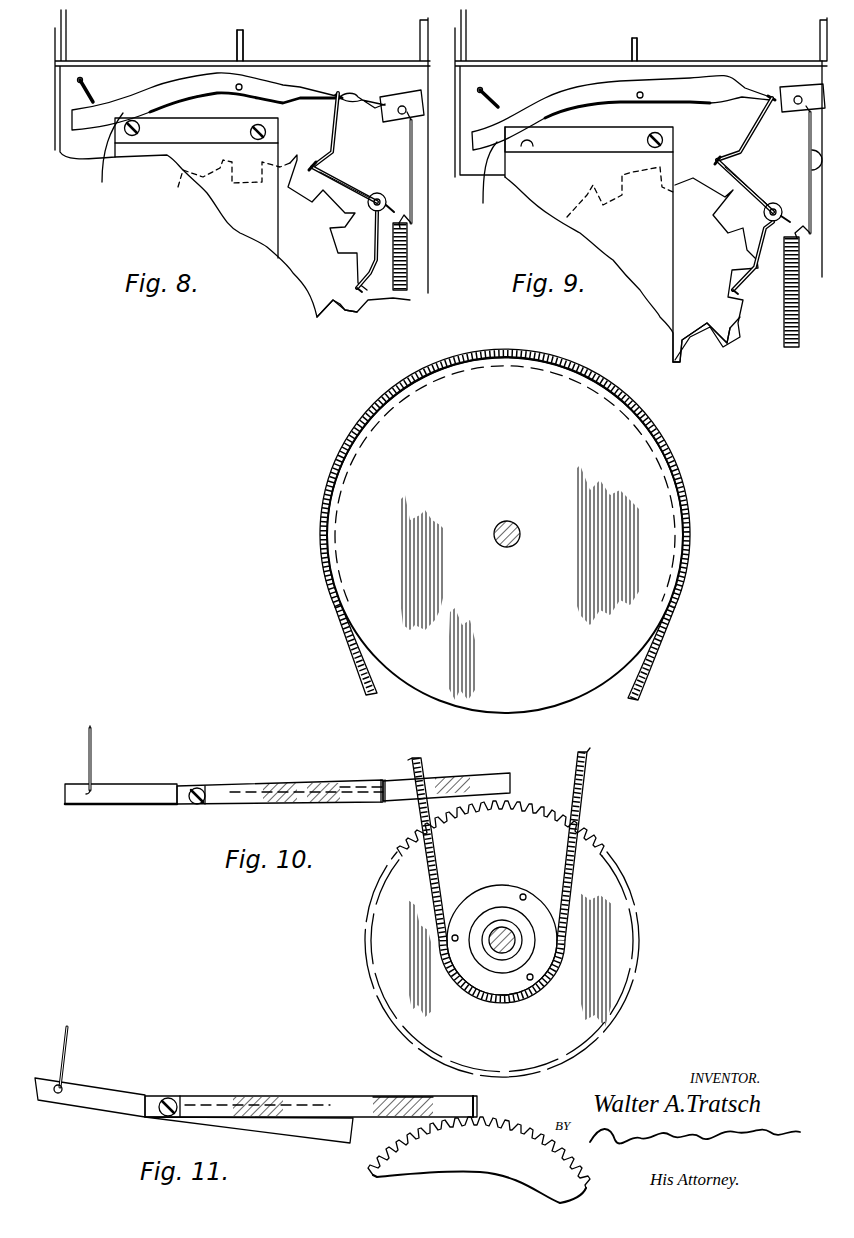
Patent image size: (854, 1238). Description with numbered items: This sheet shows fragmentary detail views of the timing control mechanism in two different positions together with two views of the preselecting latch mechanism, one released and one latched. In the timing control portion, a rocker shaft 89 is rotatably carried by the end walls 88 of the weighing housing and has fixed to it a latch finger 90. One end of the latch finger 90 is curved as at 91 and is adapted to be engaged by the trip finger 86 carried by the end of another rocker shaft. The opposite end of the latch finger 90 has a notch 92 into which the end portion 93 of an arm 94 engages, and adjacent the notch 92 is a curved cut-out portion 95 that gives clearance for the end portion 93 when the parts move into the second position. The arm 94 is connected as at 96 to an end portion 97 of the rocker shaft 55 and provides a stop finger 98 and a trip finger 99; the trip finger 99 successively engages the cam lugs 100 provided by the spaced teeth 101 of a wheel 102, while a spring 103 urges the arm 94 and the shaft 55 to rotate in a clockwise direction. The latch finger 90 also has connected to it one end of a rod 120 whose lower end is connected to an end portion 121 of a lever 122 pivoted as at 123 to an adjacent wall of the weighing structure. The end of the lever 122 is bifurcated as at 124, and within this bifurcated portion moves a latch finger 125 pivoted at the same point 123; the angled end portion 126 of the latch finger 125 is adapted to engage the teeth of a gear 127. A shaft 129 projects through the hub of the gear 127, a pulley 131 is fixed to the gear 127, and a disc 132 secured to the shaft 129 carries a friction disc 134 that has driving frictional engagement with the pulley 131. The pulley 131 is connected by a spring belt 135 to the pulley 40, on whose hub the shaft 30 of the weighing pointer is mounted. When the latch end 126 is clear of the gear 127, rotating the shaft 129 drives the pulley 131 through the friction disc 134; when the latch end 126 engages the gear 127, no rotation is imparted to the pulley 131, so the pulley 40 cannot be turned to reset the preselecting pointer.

In FIG. 10, the shaft 30 is at (512, 547).
In FIG. 10, the pulley 40 is at (660, 548).
In FIG. 8, the rocker shaft 55 is at (384, 201).
In FIG. 9, the rocker shaft 55 is at (776, 226).
In FIG. 8, the trip finger 86 is at (96, 90).
In FIG. 9, the trip finger 86 is at (500, 98).
In FIG. 8, the end walls 88 is at (337, 80).
In FIG. 9, the end walls 88 is at (628, 80).
In FIG. 8, the rocker shaft 89 is at (242, 84).
In FIG. 9, the rocker shaft 89 is at (645, 90).
In FIG. 8, the latch finger 90 is at (280, 92).
In FIG. 9, the latch finger 90 is at (708, 82).
In FIG. 8, the curved end portion 91 is at (106, 159).
In FIG. 9, the curved end portion 91 is at (483, 182).
In FIG. 8, the notch 92 is at (340, 96).
In FIG. 9, the notch 92 is at (772, 96).
In FIG. 8, the end portion 93 is at (345, 133).
In FIG. 9, the end portion 93 is at (752, 128).
In FIG. 8, the arm 94 is at (355, 178).
In FIG. 9, the arm 94 is at (755, 182).
In FIG. 8, the curved cut-out portion 95 is at (377, 103).
In FIG. 9, the curved cut-out portion 95 is at (790, 90).
In FIG. 8, the connection 96 is at (367, 200).
In FIG. 9, the connection 96 is at (766, 206).
In FIG. 8, the end portion 97 is at (370, 212).
In FIG. 9, the end portion 97 is at (764, 215).
In FIG. 8, the stop finger 98 is at (307, 164).
In FIG. 9, the stop finger 98 is at (712, 162).
In FIG. 8, the trip finger 99 is at (363, 286).
In FIG. 9, the trip finger 99 is at (742, 286).
In FIG. 8, the cam lugs 100 is at (348, 300).
In FIG. 9, the cam lugs 100 is at (730, 330).
In FIG. 8, the spaced teeth 101 is at (190, 177).
In FIG. 9, the spaced teeth 101 is at (733, 325).
In FIG. 8, the wheel 102 is at (327, 222).
In FIG. 9, the wheel 102 is at (716, 269).
In FIG. 8, the spring 103 is at (408, 262).
In FIG. 9, the spring 103 is at (778, 318).
In FIG. 9, the rod 120 is at (808, 158).
In FIG. 10, the rod 120 is at (95, 752).
In FIG. 11, the rod 120 is at (70, 1040).
In FIG. 10, the end portion 121 is at (75, 798).
In FIG. 11, the end portion 121 is at (68, 1105).
In FIG. 10, the lever 122 is at (172, 806).
In FIG. 11, the lever 122 is at (128, 1115).
In FIG. 10, the pivot 123 is at (205, 788).
In FIG. 11, the pivot 123 is at (165, 1097).
In FIG. 10, the bifurcated portion 124 is at (370, 780).
In FIG. 10, the latch finger 125 is at (448, 773).
In FIG. 11, the latch finger 125 is at (372, 1100).
In FIG. 10, the angled end portion 126 is at (510, 773).
In FIG. 11, the angled end portion 126 is at (475, 1095).
In FIG. 10, the gear 127 is at (608, 863).
In FIG. 11, the gear 127 is at (510, 1130).
In FIG. 10, the shaft 129 is at (520, 935).
In FIG. 10, the pulley 131 is at (535, 912).
In FIG. 10, the disc 132 is at (512, 950).
In FIG. 10, the friction disc 134 is at (525, 945).
In FIG. 10, the spring belt 135 is at (590, 765).